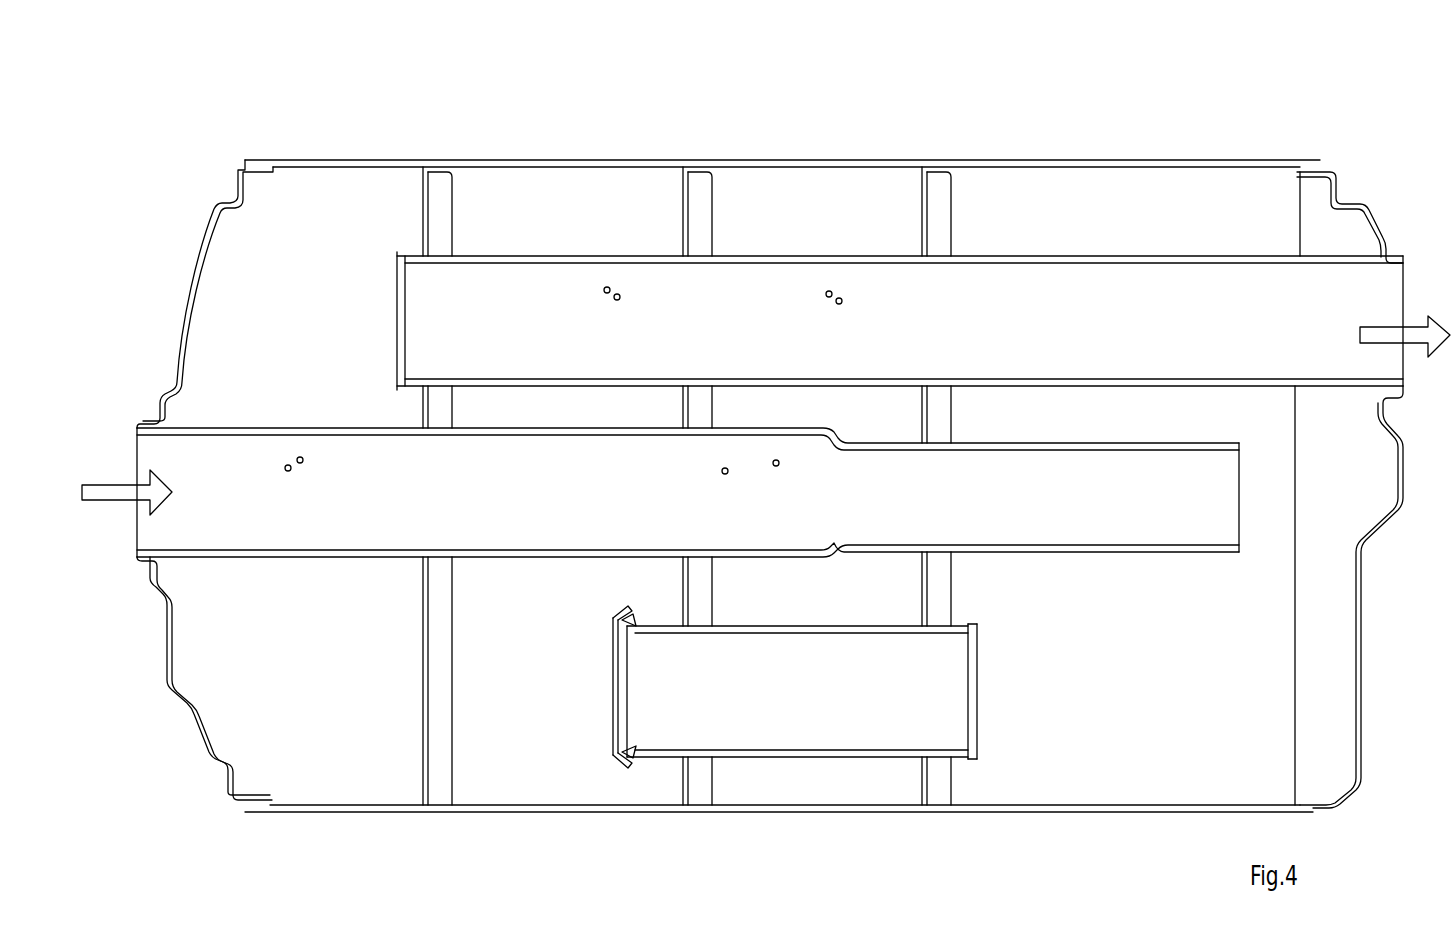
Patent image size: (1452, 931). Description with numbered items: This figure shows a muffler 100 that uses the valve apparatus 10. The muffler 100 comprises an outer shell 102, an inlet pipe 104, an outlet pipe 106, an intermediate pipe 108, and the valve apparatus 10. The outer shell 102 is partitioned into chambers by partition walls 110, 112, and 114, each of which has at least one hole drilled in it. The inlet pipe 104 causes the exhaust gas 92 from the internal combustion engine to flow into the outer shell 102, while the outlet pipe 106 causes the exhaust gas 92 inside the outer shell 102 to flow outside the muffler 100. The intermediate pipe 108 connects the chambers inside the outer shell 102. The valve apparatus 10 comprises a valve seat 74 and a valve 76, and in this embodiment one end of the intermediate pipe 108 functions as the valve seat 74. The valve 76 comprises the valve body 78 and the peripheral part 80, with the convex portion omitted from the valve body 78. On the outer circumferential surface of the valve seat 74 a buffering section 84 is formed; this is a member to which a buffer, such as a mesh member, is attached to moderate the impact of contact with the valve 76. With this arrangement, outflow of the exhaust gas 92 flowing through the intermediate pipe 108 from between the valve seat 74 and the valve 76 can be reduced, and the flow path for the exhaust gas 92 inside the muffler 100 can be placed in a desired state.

The muffler 100 is at (770, 425).
The outer shell 102 is at (1143, 163).
The inlet pipe 104 is at (247, 555).
The outlet pipe 106 is at (1222, 262).
The intermediate pipe 108 is at (880, 757).
The partition wall 110 is at (452, 202).
The partition wall 112 is at (684, 205).
The partition wall 114 is at (923, 200).
The exhaust gas 92 is at (766, 396).
The valve apparatus 10 is at (568, 713).
The valve seat 74 is at (802, 756).
The valve 76 is at (552, 687).
The valve body 78 is at (613, 690).
The peripheral part 80 is at (612, 621).
The buffering section 84 is at (643, 713).